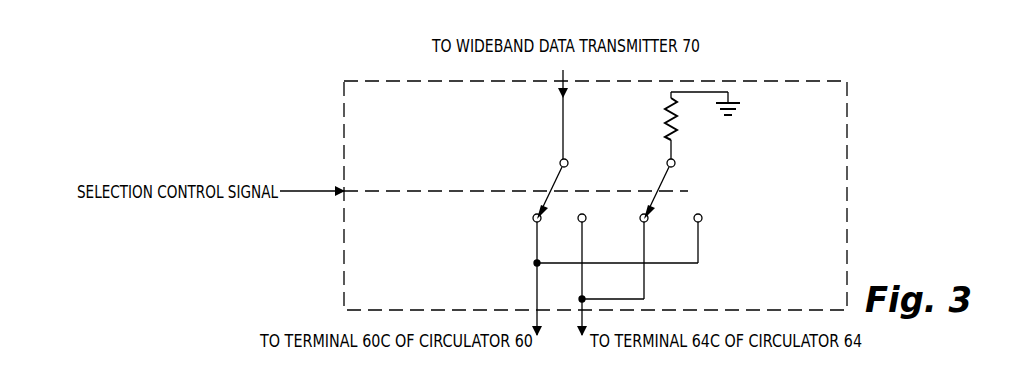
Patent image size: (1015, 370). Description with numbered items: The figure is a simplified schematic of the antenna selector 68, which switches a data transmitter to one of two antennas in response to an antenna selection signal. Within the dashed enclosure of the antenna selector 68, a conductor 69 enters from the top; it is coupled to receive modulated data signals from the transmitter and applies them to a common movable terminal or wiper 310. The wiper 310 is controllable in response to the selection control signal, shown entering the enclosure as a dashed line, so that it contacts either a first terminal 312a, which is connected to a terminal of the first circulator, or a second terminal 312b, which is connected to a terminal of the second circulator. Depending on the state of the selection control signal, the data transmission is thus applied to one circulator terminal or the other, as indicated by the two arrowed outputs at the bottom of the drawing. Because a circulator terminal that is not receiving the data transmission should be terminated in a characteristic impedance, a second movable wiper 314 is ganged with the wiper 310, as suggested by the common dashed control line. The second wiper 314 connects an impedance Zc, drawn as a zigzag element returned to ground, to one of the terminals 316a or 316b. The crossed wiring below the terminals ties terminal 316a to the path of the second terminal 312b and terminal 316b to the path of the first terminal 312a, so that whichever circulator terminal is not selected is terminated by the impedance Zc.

The antenna selector 68 is at (880, 129).
The conductor 69 is at (566, 103).
The common movable terminal or wiper 310 is at (567, 169).
The first terminal 312a is at (532, 218).
The second terminal 312b is at (586, 218).
The second movable wiper 314 is at (667, 166).
The terminal 316a is at (647, 221).
The terminal 316b is at (701, 221).
The impedance Zc is at (664, 123).